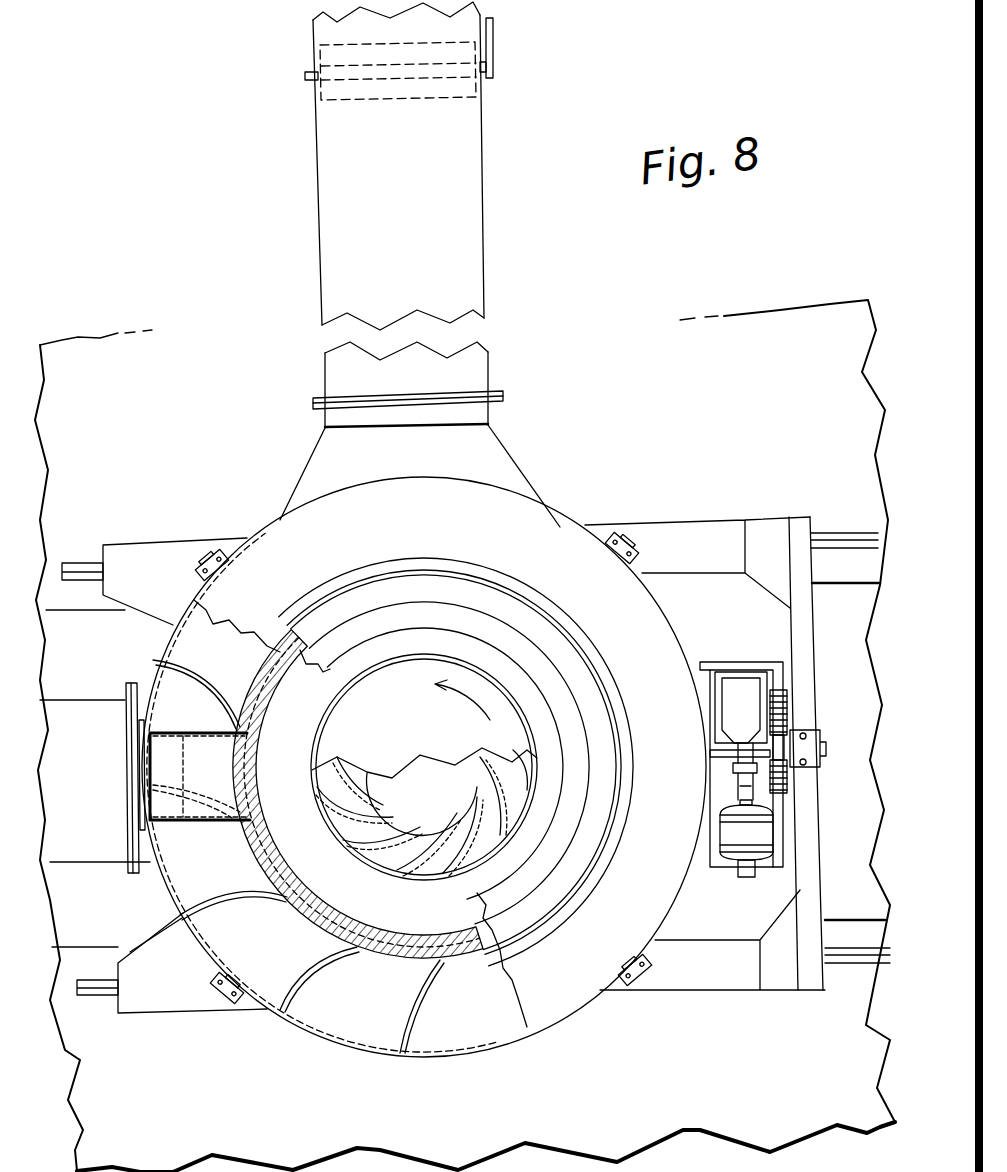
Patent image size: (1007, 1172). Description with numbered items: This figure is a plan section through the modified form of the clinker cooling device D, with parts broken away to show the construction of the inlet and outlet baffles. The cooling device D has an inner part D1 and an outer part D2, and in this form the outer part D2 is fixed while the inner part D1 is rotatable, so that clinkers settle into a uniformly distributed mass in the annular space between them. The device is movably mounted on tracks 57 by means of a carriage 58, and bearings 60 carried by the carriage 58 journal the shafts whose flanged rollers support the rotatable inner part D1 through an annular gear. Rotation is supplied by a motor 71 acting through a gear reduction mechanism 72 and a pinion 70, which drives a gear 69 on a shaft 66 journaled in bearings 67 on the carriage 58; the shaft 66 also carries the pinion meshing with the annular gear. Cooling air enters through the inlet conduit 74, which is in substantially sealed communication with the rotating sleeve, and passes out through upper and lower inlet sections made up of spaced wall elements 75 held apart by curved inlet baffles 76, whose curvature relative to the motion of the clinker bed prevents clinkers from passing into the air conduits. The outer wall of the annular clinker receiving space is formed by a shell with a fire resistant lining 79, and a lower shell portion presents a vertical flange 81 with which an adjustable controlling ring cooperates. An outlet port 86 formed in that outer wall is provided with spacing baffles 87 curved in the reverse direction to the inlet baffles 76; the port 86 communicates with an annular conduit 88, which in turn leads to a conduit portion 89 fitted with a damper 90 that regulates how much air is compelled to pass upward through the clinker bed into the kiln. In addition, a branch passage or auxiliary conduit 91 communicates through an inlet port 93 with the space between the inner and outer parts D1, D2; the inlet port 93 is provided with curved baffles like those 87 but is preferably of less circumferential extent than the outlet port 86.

The tracks 57 is at (830, 540).
The carriage 58 is at (705, 528).
The bearings 60 is at (212, 558).
The shaft 66 is at (714, 753).
The bearings 67 is at (808, 747).
The gear 69 is at (786, 789).
The pinion 70 is at (790, 700).
The motor 71 is at (735, 840).
The gear reduction mechanism 72 is at (740, 690).
The inlet conduit 74 is at (140, 708).
The wall elements 75 is at (440, 863).
The inlet baffles 76 is at (365, 850).
The fire resistant lining 79 is at (327, 917).
The vertical flange 81 is at (400, 863).
The outlet port 86 is at (473, 1033).
The spacing baffles 87 is at (220, 897).
The annular conduit 88 is at (555, 520).
The conduit portion 89 is at (465, 247).
The damper 90 is at (410, 103).
The auxiliary conduit 91 is at (173, 760).
The inlet port 93 is at (248, 792).
The clinker cooling device D is at (303, 848).
The inner part D1 is at (342, 724).
The outer part D2 is at (565, 835).